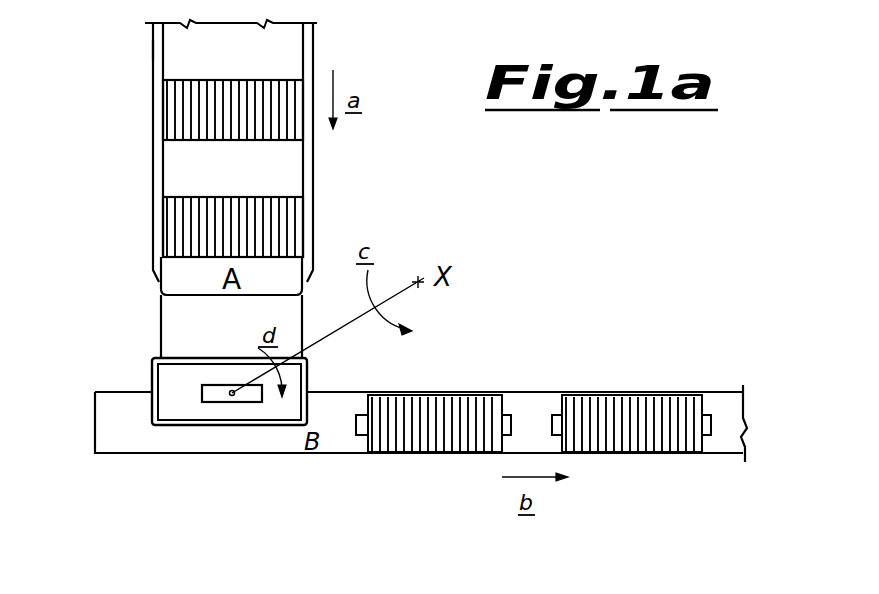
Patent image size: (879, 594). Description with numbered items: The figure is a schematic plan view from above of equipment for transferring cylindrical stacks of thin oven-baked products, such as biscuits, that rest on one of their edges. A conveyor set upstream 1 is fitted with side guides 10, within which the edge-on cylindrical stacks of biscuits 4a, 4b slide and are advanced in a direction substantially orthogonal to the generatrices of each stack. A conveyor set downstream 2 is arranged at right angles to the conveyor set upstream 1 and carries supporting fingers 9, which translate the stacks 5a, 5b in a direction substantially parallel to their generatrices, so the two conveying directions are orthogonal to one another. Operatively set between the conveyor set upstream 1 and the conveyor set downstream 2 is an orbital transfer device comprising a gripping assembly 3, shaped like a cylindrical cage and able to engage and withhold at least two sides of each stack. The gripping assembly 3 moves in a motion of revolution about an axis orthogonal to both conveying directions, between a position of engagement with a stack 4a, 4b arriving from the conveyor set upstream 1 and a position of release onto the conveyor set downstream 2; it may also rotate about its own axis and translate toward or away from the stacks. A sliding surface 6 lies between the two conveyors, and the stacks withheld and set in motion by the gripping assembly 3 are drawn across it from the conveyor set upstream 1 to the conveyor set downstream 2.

The conveyor set upstream 1 is at (295, 44).
The side guides 10 is at (153, 46).
The cylindrical stack of biscuits 4a is at (172, 115).
The cylindrical stack of biscuits 4b is at (295, 212).
The sliding surface 6 is at (165, 318).
The gripping assembly 3 is at (182, 412).
The conveyor set downstream 2 is at (103, 418).
The stack 5a is at (432, 445).
The stack 5b is at (680, 406).
The supporting fingers 9 is at (506, 420).